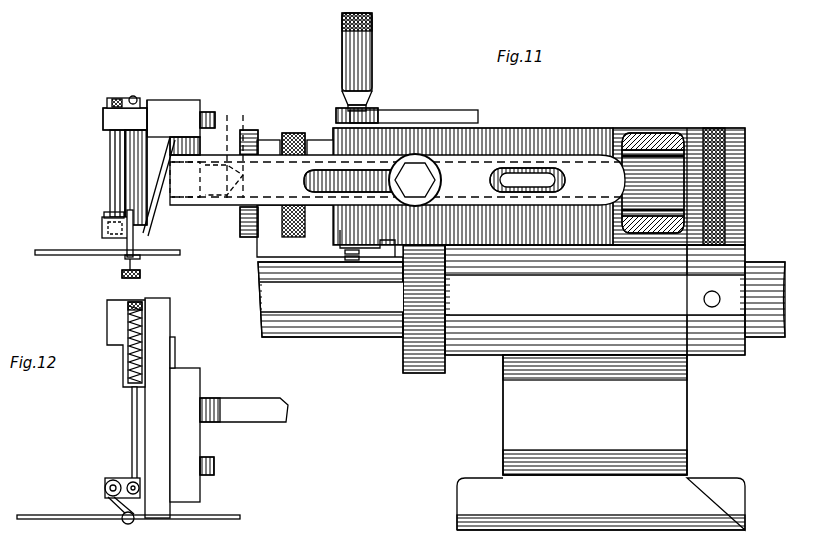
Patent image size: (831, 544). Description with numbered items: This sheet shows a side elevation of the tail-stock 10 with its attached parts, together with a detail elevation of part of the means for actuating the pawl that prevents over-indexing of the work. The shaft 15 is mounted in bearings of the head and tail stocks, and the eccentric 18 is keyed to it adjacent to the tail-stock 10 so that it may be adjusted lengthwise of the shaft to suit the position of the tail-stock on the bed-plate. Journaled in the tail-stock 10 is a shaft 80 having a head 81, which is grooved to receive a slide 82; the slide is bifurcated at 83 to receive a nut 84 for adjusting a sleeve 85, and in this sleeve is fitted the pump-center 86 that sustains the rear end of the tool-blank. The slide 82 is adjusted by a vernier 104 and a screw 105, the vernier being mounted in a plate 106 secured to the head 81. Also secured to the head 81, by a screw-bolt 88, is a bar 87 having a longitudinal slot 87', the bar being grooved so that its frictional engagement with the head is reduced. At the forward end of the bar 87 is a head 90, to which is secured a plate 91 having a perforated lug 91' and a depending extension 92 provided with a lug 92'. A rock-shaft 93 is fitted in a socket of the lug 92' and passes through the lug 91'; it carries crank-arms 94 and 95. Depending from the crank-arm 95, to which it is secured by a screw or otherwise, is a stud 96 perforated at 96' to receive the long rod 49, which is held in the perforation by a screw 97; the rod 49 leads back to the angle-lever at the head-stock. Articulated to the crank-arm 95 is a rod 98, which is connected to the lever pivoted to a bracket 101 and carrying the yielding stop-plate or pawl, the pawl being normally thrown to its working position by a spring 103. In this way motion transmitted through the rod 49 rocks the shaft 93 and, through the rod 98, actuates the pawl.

In FIG. 11, the tail-stock 10 is at (601, 442).
In FIG. 11, the shaft 15 is at (302, 338).
In FIG. 11, the eccentric 18 is at (425, 375).
In FIG. 11, the long rod 49 is at (80, 256).
In FIG. 12, the long rod 49 is at (215, 515).
In FIG. 11, the shaft 80 is at (652, 135).
In FIG. 11, the head 81 is at (440, 130).
In FIG. 11, the slide 82 is at (270, 140).
In FIG. 11, the bifurcation 83 is at (312, 140).
In FIG. 11, the nut 84 is at (293, 133).
In FIG. 11, the sleeve 85 is at (240, 222).
In FIG. 11, the pump-center 86 is at (225, 152).
In FIG. 11, the bar 87 is at (397, 180).
In FIG. 12, the bar 87 is at (244, 427).
In FIG. 11, the longitudinal slot 87' is at (527, 180).
In FIG. 11, the screw-bolt 88 is at (415, 180).
In FIG. 11, the head 90 is at (187, 103).
In FIG. 12, the head 90 is at (188, 385).
In FIG. 11, the plate 91 is at (139, 99).
In FIG. 12, the plate 91 is at (180, 408).
In FIG. 11, the perforated lug 91' is at (118, 97).
In FIG. 11, the depending extension 92 is at (163, 186).
In FIG. 11, the lug 92' is at (99, 226).
In FIG. 11, the rock-shaft 93 is at (110, 145).
In FIG. 12, the rock-shaft 93 is at (105, 488).
In FIG. 11, the crank-arm 94 is at (128, 98).
In FIG. 12, the crank-arm 94 is at (130, 480).
In FIG. 11, the crank-arm 95 is at (108, 212).
In FIG. 12, the crank-arm 95 is at (112, 503).
In FIG. 11, the stud 96 is at (149, 233).
In FIG. 12, the stud 96 is at (146, 526).
In FIG. 11, the perforation 96' is at (150, 263).
In FIG. 11, the screw 97 is at (122, 274).
In FIG. 12, the rod 98 is at (150, 325).
In FIG. 12, the bracket 101 is at (115, 325).
In FIG. 12, the spring 103 is at (147, 338).
In FIG. 11, the vernier 104 is at (372, 45).
In FIG. 11, the screw 105 is at (358, 262).
In FIG. 11, the plate 106 is at (398, 110).